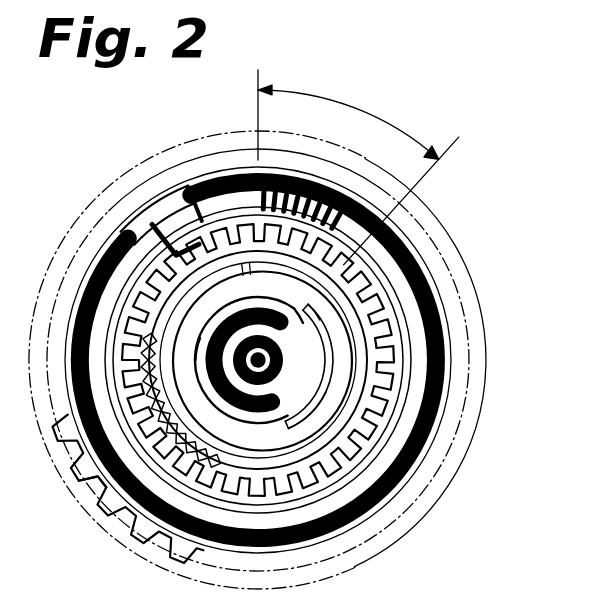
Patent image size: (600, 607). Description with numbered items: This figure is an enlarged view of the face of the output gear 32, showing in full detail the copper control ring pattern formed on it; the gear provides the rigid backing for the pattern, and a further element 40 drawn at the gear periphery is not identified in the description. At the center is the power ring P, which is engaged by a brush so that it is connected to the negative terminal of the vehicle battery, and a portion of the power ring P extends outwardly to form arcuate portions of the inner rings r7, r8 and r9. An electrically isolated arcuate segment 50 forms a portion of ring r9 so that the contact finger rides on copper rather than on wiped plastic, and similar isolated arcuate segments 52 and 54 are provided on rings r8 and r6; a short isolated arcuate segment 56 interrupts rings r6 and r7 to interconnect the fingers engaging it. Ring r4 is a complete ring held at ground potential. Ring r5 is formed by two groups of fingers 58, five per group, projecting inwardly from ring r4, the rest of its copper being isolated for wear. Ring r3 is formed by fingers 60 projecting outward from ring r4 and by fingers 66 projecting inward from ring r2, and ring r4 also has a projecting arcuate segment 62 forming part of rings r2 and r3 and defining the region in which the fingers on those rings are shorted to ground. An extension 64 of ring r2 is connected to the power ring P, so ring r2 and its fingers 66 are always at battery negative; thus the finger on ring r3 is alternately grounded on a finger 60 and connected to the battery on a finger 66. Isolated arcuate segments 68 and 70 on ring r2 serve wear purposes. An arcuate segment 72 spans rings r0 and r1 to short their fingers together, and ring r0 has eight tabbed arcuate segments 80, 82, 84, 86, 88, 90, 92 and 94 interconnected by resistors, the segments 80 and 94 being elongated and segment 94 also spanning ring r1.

The output gear 32 is at (118, 535).
The pitch circle 40 is at (333, 512).
The arcuate segment 50 is at (262, 360).
The arcuate segment 52 is at (332, 366).
The arcuate segment 54 is at (336, 397).
The short arcuate segment 56 is at (263, 248).
The fingers 58 is at (228, 432).
The fingers 60 is at (296, 472).
The projecting arcuate segment 62 is at (405, 216).
The extension 64 is at (176, 200).
The fingers 66 is at (188, 460).
The arcuate segment 68 is at (150, 222).
The arcuate segment 70 is at (368, 474).
The arcuate segment 72 is at (106, 492).
The arcuate segment 80 is at (342, 208).
The arcuate segment 82 is at (332, 202).
The arcuate segment 84 is at (321, 198).
The arcuate segment 86 is at (310, 194).
The arcuate segment 88 is at (299, 190).
The arcuate segment 90 is at (288, 188).
The arcuate segment 92 is at (276, 186).
The arcuate segment 94 is at (254, 182).
The control ring r0 is at (445, 345).
The control ring r1 is at (440, 297).
The control ring r2 is at (40, 300).
The control ring r3 is at (258, 348).
The control ring r4 is at (212, 250).
The control ring r5 is at (300, 262).
The control ring r6 is at (306, 296).
The control ring r7 is at (338, 377).
The control ring r8 is at (234, 275).
The control ring r9 is at (200, 370).
The power ring p is at (212, 385).